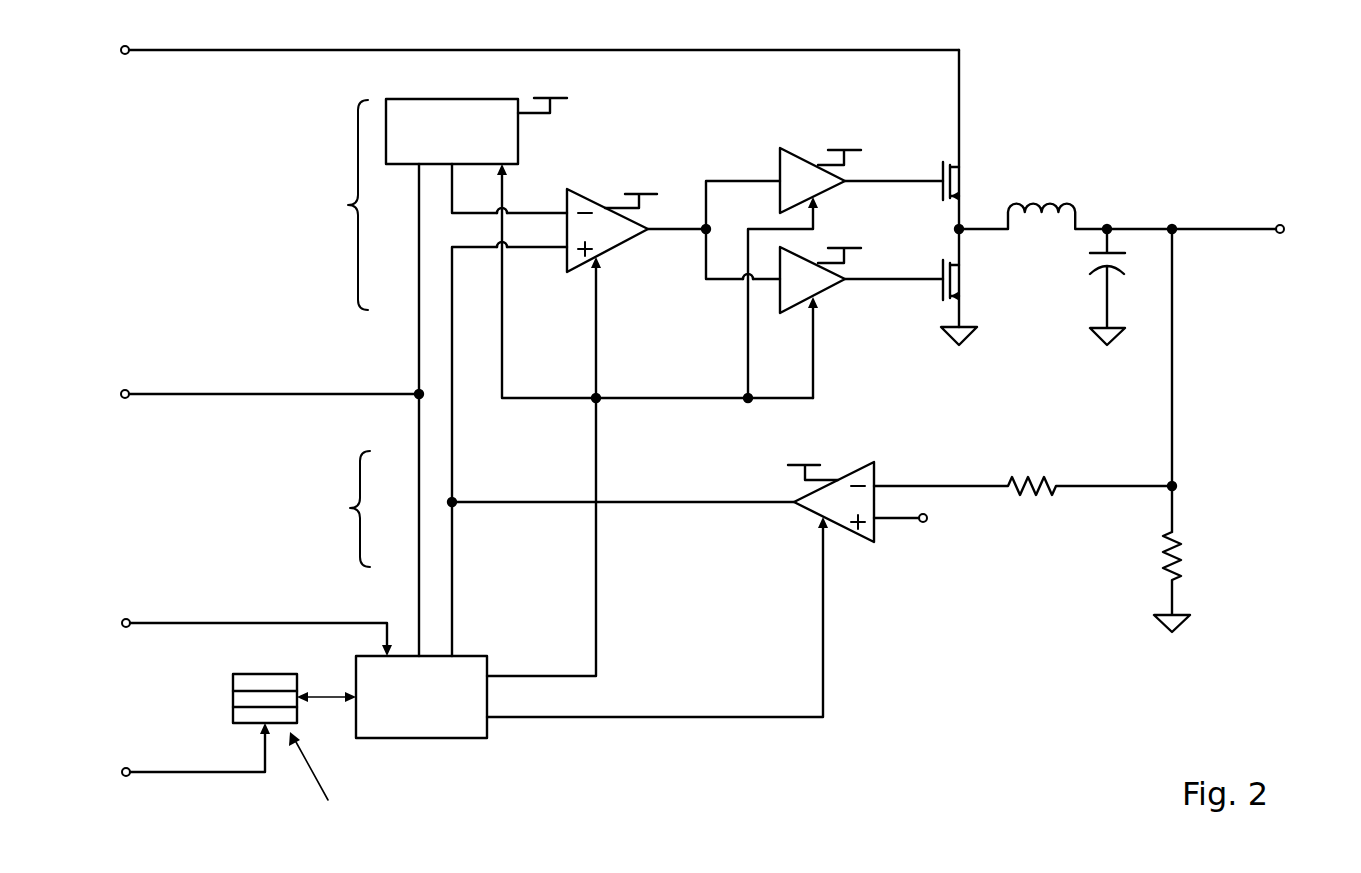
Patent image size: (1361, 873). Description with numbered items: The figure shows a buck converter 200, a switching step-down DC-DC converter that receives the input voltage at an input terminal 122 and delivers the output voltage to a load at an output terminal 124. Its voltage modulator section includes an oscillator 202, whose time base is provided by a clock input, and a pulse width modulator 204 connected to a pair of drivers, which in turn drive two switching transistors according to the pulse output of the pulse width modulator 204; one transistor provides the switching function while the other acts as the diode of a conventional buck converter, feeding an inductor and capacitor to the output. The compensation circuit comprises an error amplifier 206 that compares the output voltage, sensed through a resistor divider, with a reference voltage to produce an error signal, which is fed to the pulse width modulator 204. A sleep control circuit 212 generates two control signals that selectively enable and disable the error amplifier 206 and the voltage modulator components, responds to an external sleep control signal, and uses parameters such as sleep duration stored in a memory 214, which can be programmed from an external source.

The buck converter 200 is at (1182, 98).
The input terminal 122 is at (125, 55).
The output terminal 124 is at (1280, 235).
The oscillator 202 is at (519, 148).
The pulse width modulator 204 is at (633, 240).
The error amplifier 206 is at (860, 542).
The sleep control circuit 212 is at (418, 740).
The memory 214 is at (231, 682).